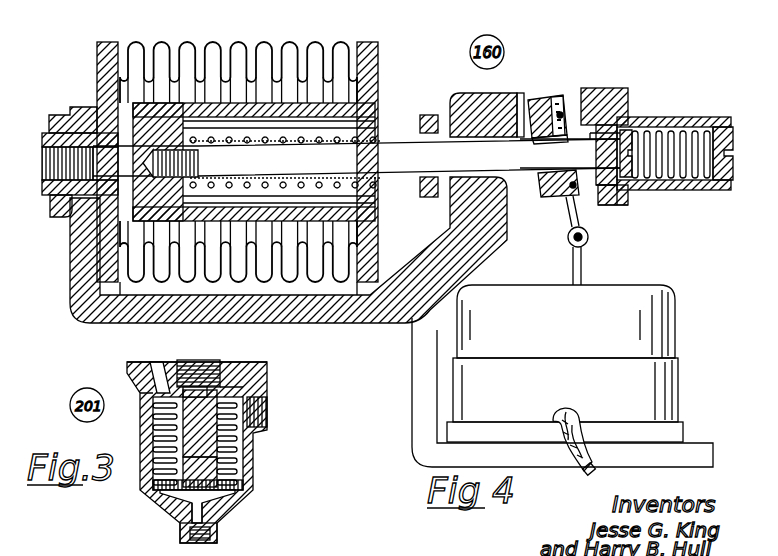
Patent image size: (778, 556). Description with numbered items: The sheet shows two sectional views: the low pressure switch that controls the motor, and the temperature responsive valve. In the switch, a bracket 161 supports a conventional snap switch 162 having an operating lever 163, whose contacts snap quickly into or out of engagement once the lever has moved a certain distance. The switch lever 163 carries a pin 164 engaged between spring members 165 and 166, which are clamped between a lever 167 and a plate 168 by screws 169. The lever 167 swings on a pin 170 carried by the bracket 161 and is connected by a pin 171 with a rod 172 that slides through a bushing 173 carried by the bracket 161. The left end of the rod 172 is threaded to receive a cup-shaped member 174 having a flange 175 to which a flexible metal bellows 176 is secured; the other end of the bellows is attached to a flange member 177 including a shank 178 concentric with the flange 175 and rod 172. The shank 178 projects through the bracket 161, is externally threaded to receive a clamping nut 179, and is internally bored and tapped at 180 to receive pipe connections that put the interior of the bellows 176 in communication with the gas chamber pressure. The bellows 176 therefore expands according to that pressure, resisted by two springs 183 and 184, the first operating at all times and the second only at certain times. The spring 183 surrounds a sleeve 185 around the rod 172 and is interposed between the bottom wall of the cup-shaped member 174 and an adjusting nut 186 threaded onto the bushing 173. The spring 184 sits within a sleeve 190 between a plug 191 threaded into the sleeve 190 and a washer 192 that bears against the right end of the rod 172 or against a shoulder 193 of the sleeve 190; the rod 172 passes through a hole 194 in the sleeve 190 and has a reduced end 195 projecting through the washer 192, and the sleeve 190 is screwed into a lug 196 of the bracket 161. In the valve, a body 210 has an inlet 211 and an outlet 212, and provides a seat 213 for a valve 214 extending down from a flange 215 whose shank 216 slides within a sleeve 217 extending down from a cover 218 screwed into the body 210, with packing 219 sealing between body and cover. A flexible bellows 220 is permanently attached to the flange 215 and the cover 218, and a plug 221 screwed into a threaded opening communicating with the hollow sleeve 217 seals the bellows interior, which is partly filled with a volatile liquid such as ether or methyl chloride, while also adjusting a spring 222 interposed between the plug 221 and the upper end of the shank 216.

In FIG. 4, the bracket 161 is at (410, 373).
In FIG. 4, the snap switch 162 is at (691, 370).
In FIG. 4, the operating lever 163 is at (572, 266).
In FIG. 4, the pin 164 is at (570, 243).
In FIG. 4, the spring member 165 is at (568, 238).
In FIG. 4, the spring member 166 is at (584, 220).
In FIG. 4, the lever 167 is at (568, 195).
In FIG. 4, the plate 168 is at (559, 100).
In FIG. 4, the screws 169 is at (562, 110).
In FIG. 4, the pin 170 is at (541, 108).
In FIG. 4, the pin 171 is at (553, 155).
In FIG. 4, the rod 172 is at (397, 153).
In FIG. 4, the bushing 173 is at (444, 133).
In FIG. 4, the cup-shaped member 174 is at (224, 46).
In FIG. 4, the flange 175 is at (358, 50).
In FIG. 4, the flexible metal bellows 176 is at (187, 44).
In FIG. 4, the flange member 177 is at (97, 43).
In FIG. 4, the shank 178 is at (83, 205).
In FIG. 4, the clamping nut 179 is at (58, 118).
In FIG. 4, the tapped bore 180 is at (55, 163).
In FIG. 4, the spring 183 is at (373, 193).
In FIG. 4, the spring 184 is at (665, 130).
In FIG. 4, the sleeve 185 is at (373, 200).
In FIG. 4, the adjusting nut 186 is at (428, 198).
In FIG. 4, the sleeve 190 is at (695, 118).
In FIG. 4, the plug 191 is at (733, 150).
In FIG. 4, the washer 192 is at (620, 185).
In FIG. 4, the shoulder 193 is at (603, 118).
In FIG. 4, the hole 194 is at (628, 196).
In FIG. 4, the reduced end 195 is at (634, 128).
In FIG. 4, the lug 196 is at (637, 224).
In FIG. 3, the body 210 is at (145, 438).
In FIG. 3, the inlet 211 is at (265, 413).
In FIG. 3, the outlet nozzle 212 is at (218, 531).
In FIG. 3, the seat 213 is at (192, 517).
In FIG. 3, the valve 214 is at (240, 505).
In FIG. 3, the flange 215 is at (248, 487).
In FIG. 3, the shank 216 is at (238, 468).
In FIG. 3, the sleeve 217 is at (228, 448).
In FIG. 3, the cover 218 is at (160, 375).
In FIG. 3, the packing 219 is at (265, 382).
In FIG. 3, the flexible bellows 220 is at (235, 437).
In FIG. 3, the plug 221 is at (205, 360).
In FIG. 3, the spring 222 is at (248, 395).